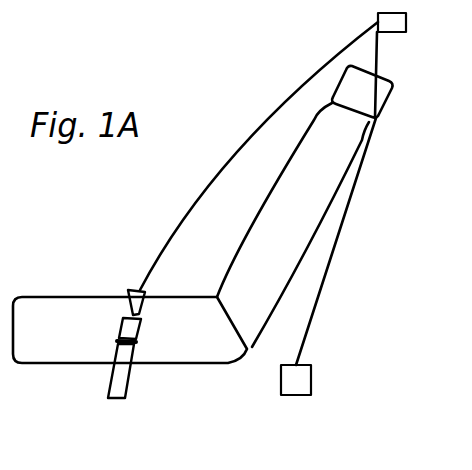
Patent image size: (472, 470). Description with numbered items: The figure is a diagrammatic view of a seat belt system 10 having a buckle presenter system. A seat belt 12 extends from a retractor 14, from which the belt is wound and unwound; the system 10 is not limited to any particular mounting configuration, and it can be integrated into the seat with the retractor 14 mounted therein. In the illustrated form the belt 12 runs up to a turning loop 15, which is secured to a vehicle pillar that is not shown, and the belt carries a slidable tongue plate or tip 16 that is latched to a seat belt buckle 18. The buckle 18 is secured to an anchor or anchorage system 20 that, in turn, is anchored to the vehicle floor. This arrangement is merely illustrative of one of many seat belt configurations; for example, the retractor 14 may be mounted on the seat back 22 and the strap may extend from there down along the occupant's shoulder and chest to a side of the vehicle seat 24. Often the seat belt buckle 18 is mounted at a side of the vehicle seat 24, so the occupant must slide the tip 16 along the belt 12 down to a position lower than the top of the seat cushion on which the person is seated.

The seat belt system 10 is at (232, 72).
The seat belt 12 is at (372, 190).
The retractor 14 is at (300, 378).
The turning loop 15 is at (393, 32).
The tongue plate 16 is at (130, 288).
The seat belt buckle 18 is at (123, 328).
The anchorage system 20 is at (125, 377).
The seat back 22 is at (296, 268).
The vehicle seat 24 is at (83, 313).